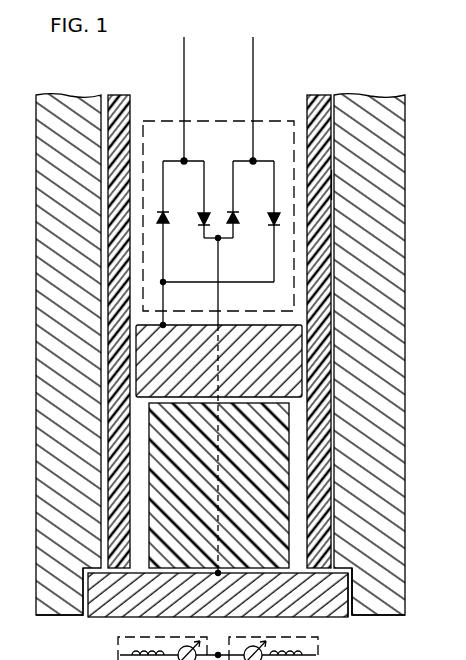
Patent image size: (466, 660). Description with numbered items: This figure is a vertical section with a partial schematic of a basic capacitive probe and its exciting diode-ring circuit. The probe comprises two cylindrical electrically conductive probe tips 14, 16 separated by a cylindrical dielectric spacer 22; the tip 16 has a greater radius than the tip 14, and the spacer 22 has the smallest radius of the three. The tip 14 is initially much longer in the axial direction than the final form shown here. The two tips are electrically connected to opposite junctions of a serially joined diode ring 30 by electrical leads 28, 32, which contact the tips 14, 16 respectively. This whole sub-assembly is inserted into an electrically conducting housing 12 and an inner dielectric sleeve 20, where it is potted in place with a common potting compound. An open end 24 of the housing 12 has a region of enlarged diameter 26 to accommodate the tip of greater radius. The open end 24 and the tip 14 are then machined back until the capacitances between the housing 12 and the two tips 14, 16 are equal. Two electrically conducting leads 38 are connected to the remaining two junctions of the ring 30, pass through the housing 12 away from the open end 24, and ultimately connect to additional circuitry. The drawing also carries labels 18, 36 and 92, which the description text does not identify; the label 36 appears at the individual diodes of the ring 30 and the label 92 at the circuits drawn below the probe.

The housing 12 is at (395, 160).
The probe tip 14 is at (280, 602).
The probe tip 16 is at (267, 369).
The insulating layer 18 is at (333, 184).
The inner dielectric sleeve 20 is at (318, 95).
The dielectric spacer 22 is at (267, 494).
The open end 24 is at (55, 617).
The region of enlarged diameter 26 is at (352, 569).
The electrical lead 28 is at (219, 305).
The diode ring 30 is at (271, 120).
The electrical lead 32 is at (164, 305).
The diodes 36 is at (201, 226).
The electrically conducting leads 38 is at (184, 70).
The measuring circuits 92 is at (110, 656).